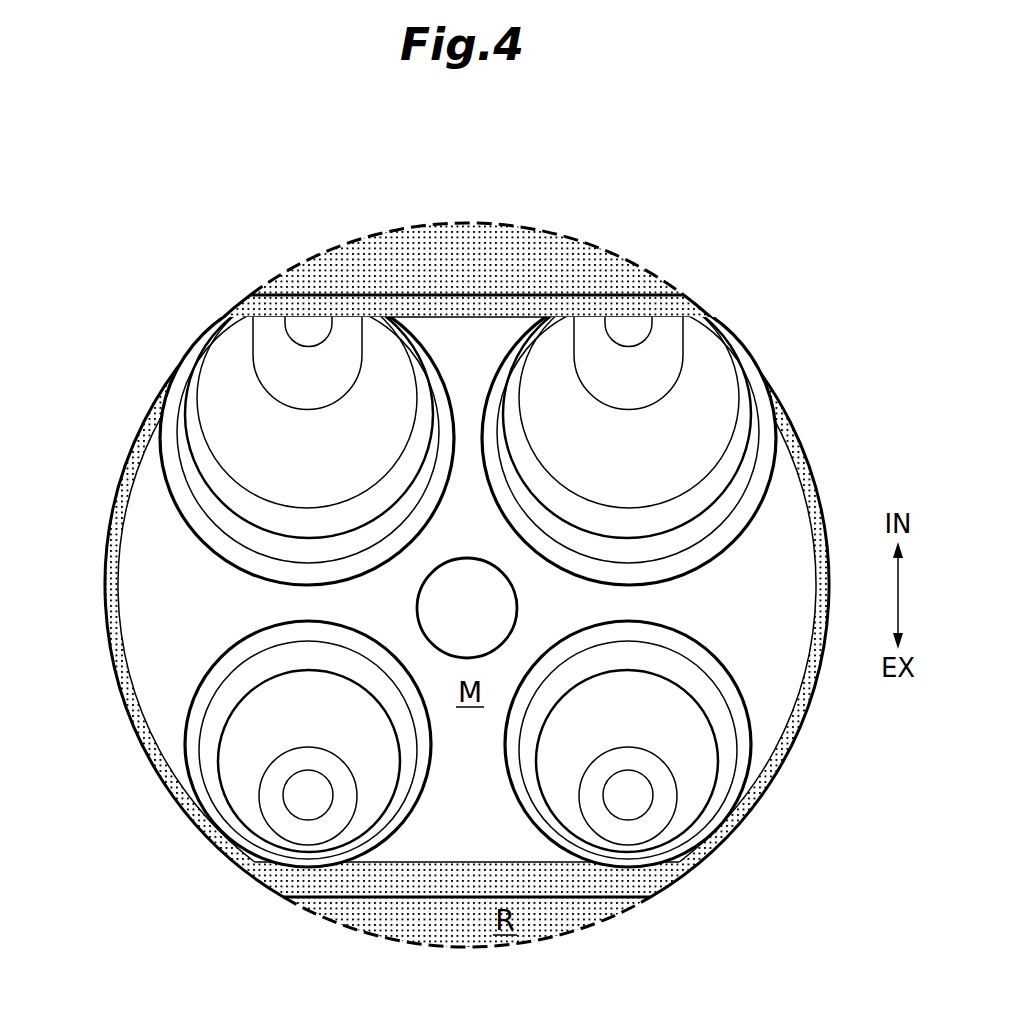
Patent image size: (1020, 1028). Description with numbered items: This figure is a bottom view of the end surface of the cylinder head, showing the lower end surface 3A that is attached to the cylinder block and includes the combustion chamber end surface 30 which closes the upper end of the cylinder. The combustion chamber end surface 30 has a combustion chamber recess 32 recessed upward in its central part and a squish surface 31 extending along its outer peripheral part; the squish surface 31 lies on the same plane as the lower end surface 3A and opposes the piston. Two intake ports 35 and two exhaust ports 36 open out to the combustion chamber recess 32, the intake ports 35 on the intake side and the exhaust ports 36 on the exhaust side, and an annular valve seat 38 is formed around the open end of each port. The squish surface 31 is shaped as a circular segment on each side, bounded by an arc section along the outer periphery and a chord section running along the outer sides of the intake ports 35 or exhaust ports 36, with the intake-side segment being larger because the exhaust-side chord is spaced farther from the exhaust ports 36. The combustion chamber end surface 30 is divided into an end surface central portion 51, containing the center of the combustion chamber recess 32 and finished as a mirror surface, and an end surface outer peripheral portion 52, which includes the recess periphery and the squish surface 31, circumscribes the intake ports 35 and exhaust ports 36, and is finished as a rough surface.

The lower end surface 3A is at (228, 226).
The combustion chamber end surface 30 is at (150, 553).
The squish surface 31 is at (472, 240).
The combustion chamber recess 32 is at (528, 295).
The intake port 35 is at (223, 377).
The exhaust port 36 is at (238, 788).
The valve seat 38 is at (183, 458).
The end surface central portion 51 is at (287, 601).
The end surface outer peripheral portion 52 is at (108, 572).